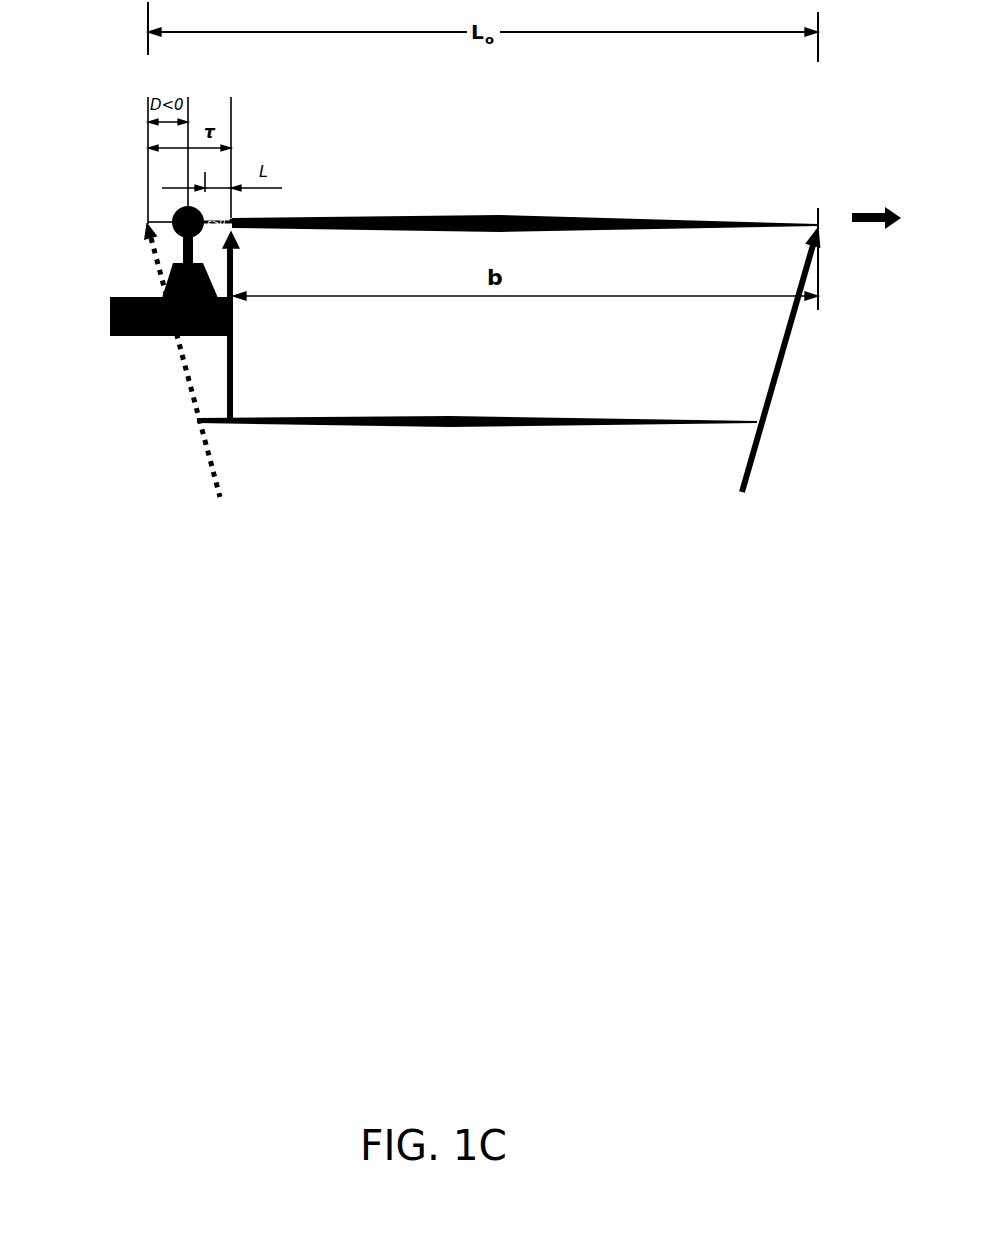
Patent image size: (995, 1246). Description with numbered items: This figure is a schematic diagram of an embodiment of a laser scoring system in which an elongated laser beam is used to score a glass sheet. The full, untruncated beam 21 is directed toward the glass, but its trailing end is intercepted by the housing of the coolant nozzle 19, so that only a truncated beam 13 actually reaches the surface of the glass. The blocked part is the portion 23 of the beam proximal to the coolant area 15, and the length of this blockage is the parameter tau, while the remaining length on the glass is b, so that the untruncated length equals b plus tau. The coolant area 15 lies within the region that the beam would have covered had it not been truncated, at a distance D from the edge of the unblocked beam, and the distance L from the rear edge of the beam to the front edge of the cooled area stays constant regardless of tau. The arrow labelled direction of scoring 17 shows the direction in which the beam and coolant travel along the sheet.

The truncated beam 13 is at (487, 217).
The coolant area 15 is at (177, 232).
The direction of scoring 17 is at (877, 210).
The nozzle 19 is at (122, 337).
The untruncated beam 21 is at (457, 427).
The truncated portion of the beam 23 is at (231, 220).